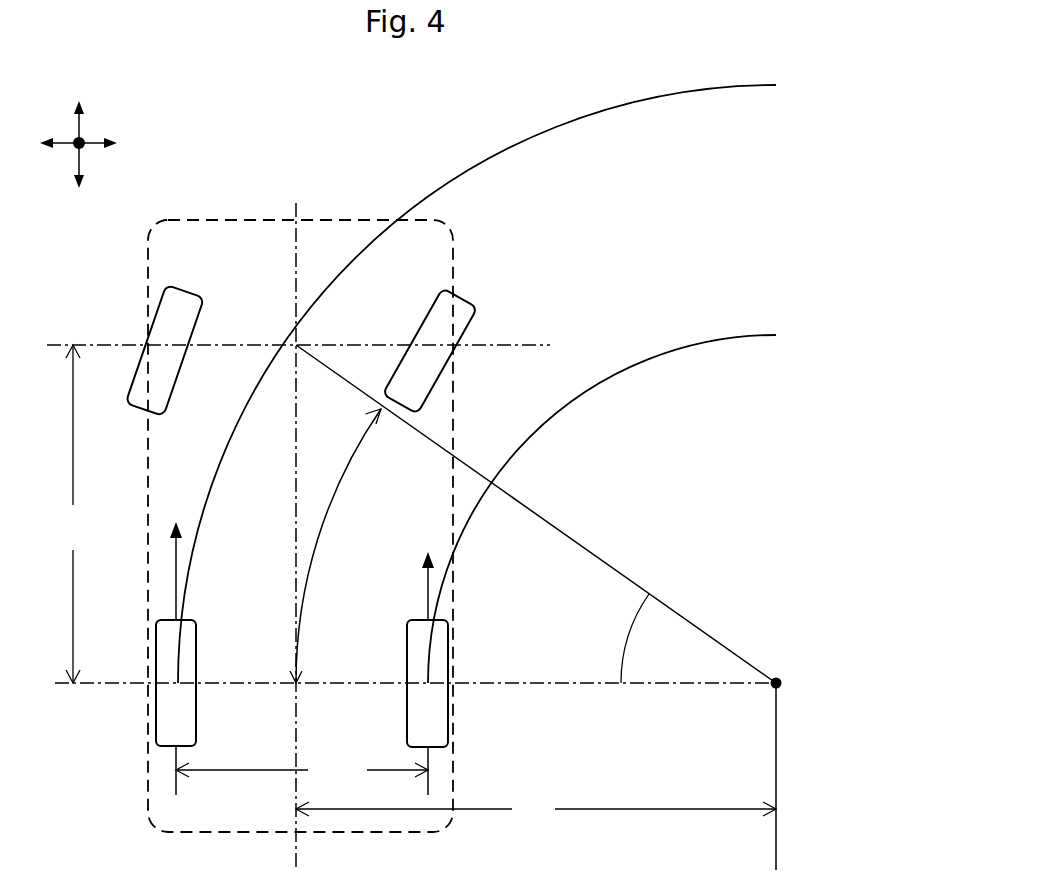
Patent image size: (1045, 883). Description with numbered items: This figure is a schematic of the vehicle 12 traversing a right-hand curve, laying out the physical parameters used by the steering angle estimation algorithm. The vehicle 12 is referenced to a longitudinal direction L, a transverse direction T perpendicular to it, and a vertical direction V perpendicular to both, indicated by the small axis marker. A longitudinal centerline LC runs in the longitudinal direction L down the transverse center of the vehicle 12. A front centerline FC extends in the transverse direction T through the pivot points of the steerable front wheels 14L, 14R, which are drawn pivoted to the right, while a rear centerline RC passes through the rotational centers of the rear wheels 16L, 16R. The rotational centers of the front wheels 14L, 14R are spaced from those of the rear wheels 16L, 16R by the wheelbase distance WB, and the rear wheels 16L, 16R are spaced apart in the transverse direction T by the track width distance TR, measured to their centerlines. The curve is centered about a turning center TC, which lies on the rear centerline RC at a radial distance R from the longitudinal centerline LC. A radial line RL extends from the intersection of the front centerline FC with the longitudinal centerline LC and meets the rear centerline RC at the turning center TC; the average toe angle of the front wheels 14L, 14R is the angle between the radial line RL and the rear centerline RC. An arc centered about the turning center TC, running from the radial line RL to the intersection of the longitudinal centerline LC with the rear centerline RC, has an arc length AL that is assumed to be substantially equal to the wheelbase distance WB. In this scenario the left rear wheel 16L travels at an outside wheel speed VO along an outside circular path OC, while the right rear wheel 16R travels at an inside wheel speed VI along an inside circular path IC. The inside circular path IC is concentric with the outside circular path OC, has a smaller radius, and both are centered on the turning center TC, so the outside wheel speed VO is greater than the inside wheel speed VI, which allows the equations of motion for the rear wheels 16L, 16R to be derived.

The vehicle 12 is at (352, 222).
The front wheel 14L is at (192, 290).
The front wheel 14R is at (478, 303).
The rear wheel 16L is at (158, 747).
The rear wheel 16R is at (448, 722).
The longitudinal centerline LC is at (294, 518).
The front centerline FC is at (99, 341).
The rear centerline RC is at (105, 687).
The turning center TC is at (782, 682).
The outside circular path OC is at (722, 86).
The inside circular path IC is at (728, 333).
The radial line RL is at (553, 521).
The arc length AL is at (338, 487).
The outside wheel speed VO is at (172, 558).
The inside wheel speed VI is at (426, 574).
The wheelbase distance WB is at (71, 514).
The track width distance TR is at (302, 770).
The radial distance R is at (536, 810).
The vertical direction V is at (90, 135).
The longitudinal direction L is at (82, 162).
The transverse direction T is at (62, 147).